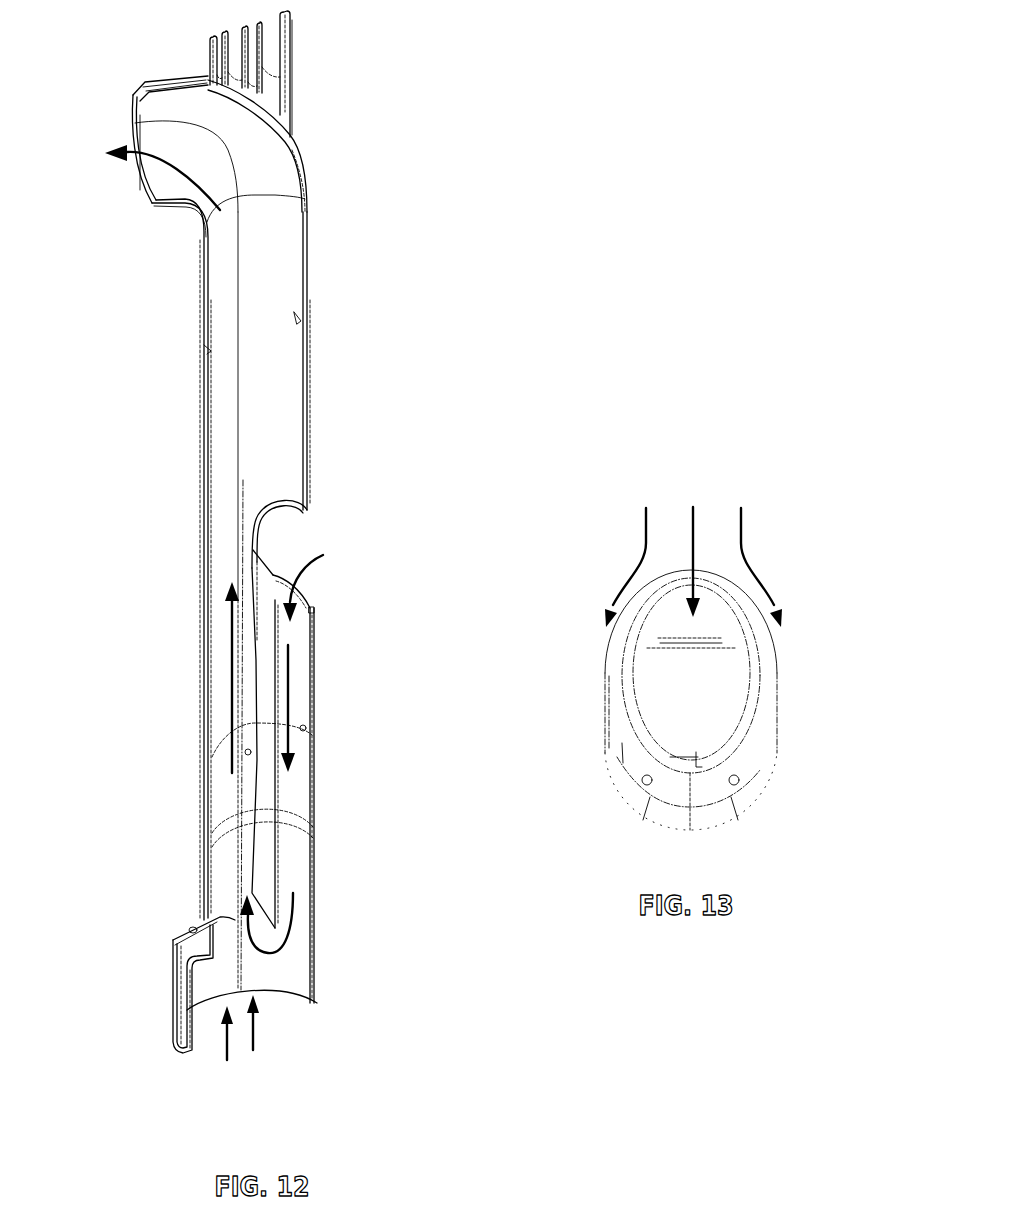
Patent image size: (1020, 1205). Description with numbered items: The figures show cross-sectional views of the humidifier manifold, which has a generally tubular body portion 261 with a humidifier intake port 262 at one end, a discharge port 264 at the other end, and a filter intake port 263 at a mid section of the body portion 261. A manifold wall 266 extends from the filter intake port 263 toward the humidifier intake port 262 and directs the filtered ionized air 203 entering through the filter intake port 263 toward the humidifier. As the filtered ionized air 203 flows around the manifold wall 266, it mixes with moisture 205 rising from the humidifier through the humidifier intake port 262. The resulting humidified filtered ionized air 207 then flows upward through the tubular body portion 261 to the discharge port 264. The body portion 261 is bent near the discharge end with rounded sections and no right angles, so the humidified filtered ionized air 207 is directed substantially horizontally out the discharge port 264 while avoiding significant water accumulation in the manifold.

In FIG. 12, the tubular body portion 261 is at (312, 397).
In FIG. 13, the tubular body portion 261 is at (768, 668).
In FIG. 12, the discharge port 264 is at (106, 122).
In FIG. 12, the humidified filtered ionized air 207 is at (184, 172).
In FIG. 12, the filter intake port 263 is at (324, 532).
In FIG. 12, the filtered ionized air 203 is at (300, 575).
In FIG. 13, the filtered ionized air 203 is at (646, 525).
In FIG. 12, the manifold wall 266 is at (267, 842).
In FIG. 13, the manifold wall 266 is at (680, 652).
In FIG. 12, the moisture 205 is at (253, 1025).
In FIG. 12, the humidifier intake port 262 is at (276, 1055).